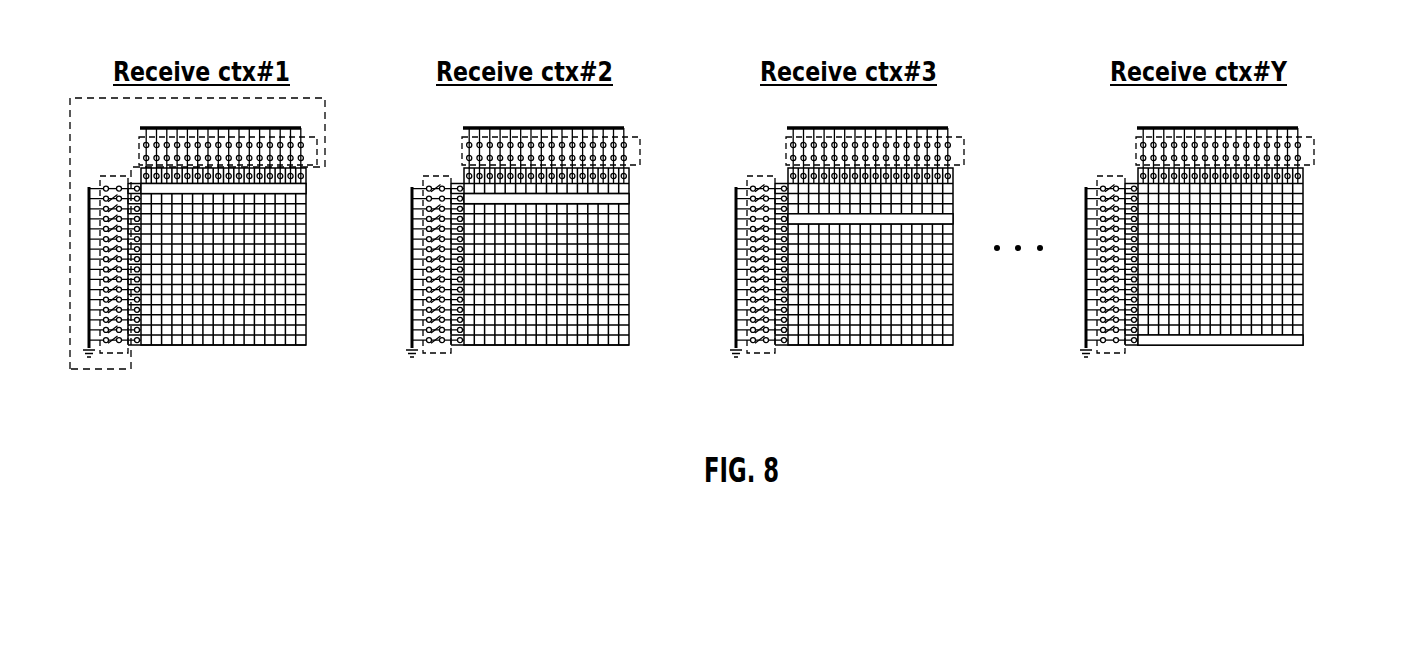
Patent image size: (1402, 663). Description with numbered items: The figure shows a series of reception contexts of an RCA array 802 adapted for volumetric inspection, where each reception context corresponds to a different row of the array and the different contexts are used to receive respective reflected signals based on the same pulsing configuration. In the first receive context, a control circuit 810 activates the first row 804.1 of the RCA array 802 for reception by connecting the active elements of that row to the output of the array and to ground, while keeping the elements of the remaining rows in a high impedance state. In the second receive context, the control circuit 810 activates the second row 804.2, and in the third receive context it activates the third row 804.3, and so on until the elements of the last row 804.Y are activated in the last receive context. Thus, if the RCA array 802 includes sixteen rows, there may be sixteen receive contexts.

The RCA array 802 is at (279, 347).
The first row 804.1 is at (306, 188).
The second row 804.2 is at (629, 197).
The third row 804.3 is at (953, 218).
The last row 804.Y is at (1303, 340).
The control circuit 810 is at (310, 97).